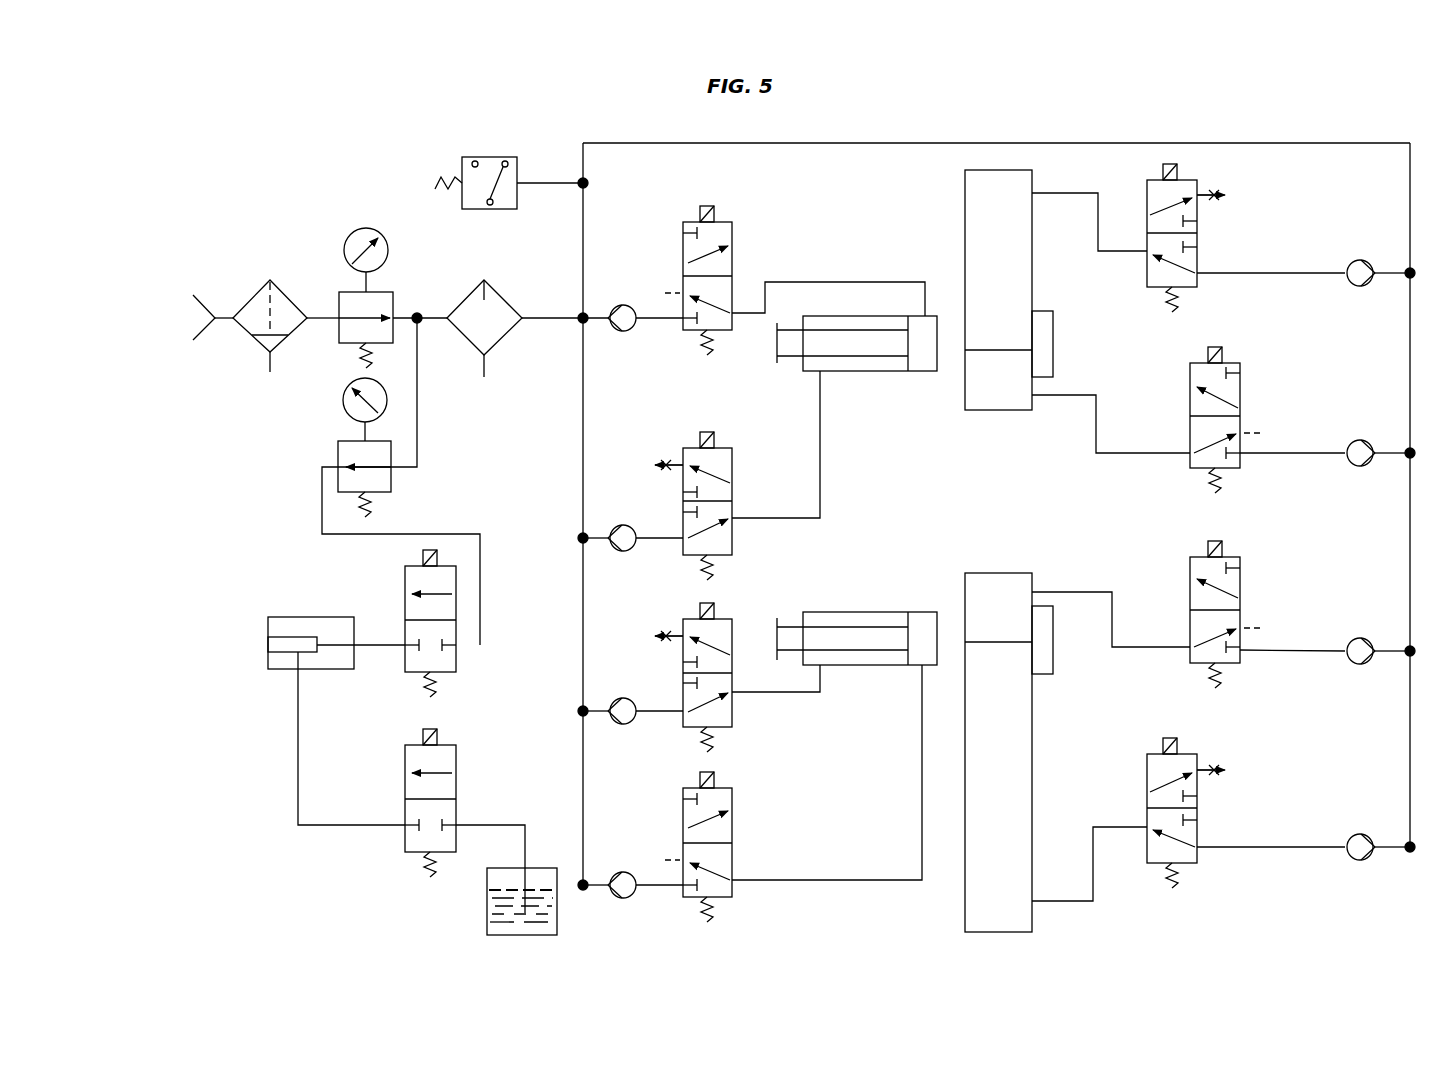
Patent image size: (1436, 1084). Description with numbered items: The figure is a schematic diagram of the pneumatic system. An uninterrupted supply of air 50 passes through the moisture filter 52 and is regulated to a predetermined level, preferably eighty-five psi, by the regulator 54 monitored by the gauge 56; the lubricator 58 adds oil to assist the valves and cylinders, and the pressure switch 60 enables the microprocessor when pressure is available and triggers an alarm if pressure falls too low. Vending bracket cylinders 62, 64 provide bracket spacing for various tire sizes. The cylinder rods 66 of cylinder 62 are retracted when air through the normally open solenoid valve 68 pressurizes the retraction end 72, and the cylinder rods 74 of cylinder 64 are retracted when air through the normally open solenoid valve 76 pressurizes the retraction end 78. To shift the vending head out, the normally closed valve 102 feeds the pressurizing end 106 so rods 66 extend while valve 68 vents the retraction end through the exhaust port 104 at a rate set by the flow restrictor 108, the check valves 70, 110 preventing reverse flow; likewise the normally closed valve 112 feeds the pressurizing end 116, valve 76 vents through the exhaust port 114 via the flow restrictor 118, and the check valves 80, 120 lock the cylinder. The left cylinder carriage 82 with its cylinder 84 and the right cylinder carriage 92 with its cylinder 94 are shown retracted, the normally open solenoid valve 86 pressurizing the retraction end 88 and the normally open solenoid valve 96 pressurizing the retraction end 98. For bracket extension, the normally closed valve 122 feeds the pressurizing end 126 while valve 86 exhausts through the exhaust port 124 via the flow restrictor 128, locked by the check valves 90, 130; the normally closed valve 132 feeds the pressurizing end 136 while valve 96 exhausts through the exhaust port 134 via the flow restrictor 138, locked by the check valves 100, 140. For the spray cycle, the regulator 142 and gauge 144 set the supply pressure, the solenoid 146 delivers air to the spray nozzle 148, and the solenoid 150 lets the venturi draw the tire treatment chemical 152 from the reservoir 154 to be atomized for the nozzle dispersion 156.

The supply of air 50 is at (187, 318).
The moisture filter 52 is at (258, 345).
The regulator 54 is at (338, 342).
The gauge 56 is at (352, 232).
The lubricator 58 is at (470, 350).
The pressure switch 60 is at (490, 156).
The vending bracket cylinder 62 is at (930, 372).
The vending bracket cylinder 64 is at (905, 667).
The cylinder rods 66 is at (780, 360).
The normally open solenoid valve 68 is at (732, 460).
The check valve 70 is at (612, 552).
The retraction end 72 is at (810, 372).
The cylinder rods 74 is at (779, 655).
The normally open solenoid valve 76 is at (735, 620).
The retraction end 78 is at (816, 667).
The check valve 80 is at (612, 725).
The left cylinder carriage 82 is at (1053, 328).
The cylinder 84 is at (1032, 258).
The normally open solenoid valve 86 is at (1147, 207).
The retraction end 88 is at (1032, 185).
The check valve 90 is at (1352, 262).
The right cylinder carriage 92 is at (1053, 652).
The cylinder 94 is at (1032, 792).
The normally open solenoid valve 96 is at (1150, 865).
The retraction end 98 is at (1032, 890).
The check valve 100 is at (1365, 862).
The normally closed valve 102 is at (735, 260).
The exhaust port 104 is at (662, 472).
The pressurizing end 106 is at (932, 316).
The flow restrictor 108 is at (668, 460).
The check valve 110 is at (612, 332).
The normally closed valve 112 is at (722, 790).
The exhaust port 114 is at (668, 631).
The pressurizing end 116 is at (932, 612).
The flow restrictor 118 is at (662, 642).
The check valve 120 is at (605, 870).
The normally closed valve 122 is at (1190, 382).
The exhaust port 124 is at (1202, 198).
The pressurizing end 126 is at (1032, 405).
The flow restrictor 128 is at (1207, 192).
The check valve 130 is at (1352, 442).
The normally closed valve 132 is at (1190, 602).
The exhaust port 134 is at (1202, 775).
The pressurizing end 136 is at (1032, 577).
The flow restrictor 138 is at (1207, 767).
The check valve 140 is at (1350, 638).
The regulator 142 is at (391, 480).
The gauge 144 is at (345, 407).
The solenoid 146 is at (456, 665).
The spray nozzle 148 is at (268, 662).
The solenoid 150 is at (456, 790).
The tire treatment chemical 152 is at (545, 920).
The reservoir 154 is at (487, 905).
The nozzle dispersion 156 is at (268, 645).